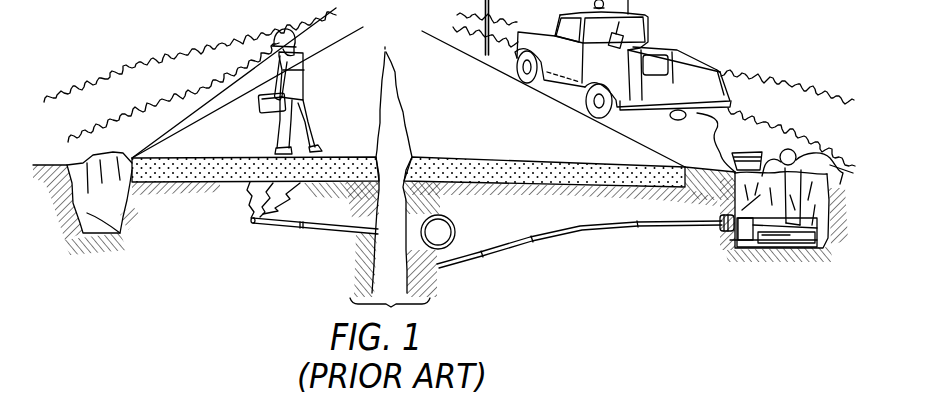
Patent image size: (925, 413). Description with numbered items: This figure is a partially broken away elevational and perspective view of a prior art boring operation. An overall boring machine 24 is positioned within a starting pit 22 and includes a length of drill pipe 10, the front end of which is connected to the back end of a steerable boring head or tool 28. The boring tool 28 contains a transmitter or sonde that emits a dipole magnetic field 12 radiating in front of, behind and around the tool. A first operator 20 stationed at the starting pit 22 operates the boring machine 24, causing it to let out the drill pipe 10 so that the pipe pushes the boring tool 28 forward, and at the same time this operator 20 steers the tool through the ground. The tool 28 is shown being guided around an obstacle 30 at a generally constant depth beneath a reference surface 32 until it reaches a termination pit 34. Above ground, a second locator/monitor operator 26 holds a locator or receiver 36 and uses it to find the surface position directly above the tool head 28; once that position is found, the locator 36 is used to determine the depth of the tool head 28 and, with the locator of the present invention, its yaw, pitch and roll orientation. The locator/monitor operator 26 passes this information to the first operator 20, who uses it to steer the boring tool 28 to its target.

The drill pipe 10 is at (627, 226).
The dipole magnetic field 12 is at (246, 193).
The first operator 20 is at (803, 155).
The starting pit 22 is at (767, 248).
The boring machine 24 is at (792, 243).
The locator/monitor operator 26 is at (306, 74).
The steerable boring head or tool 28 is at (271, 221).
The obstacle 30 is at (450, 237).
The reference surface 32 is at (446, 141).
The termination pit 34 is at (120, 233).
The locator or receiver 36 is at (264, 113).